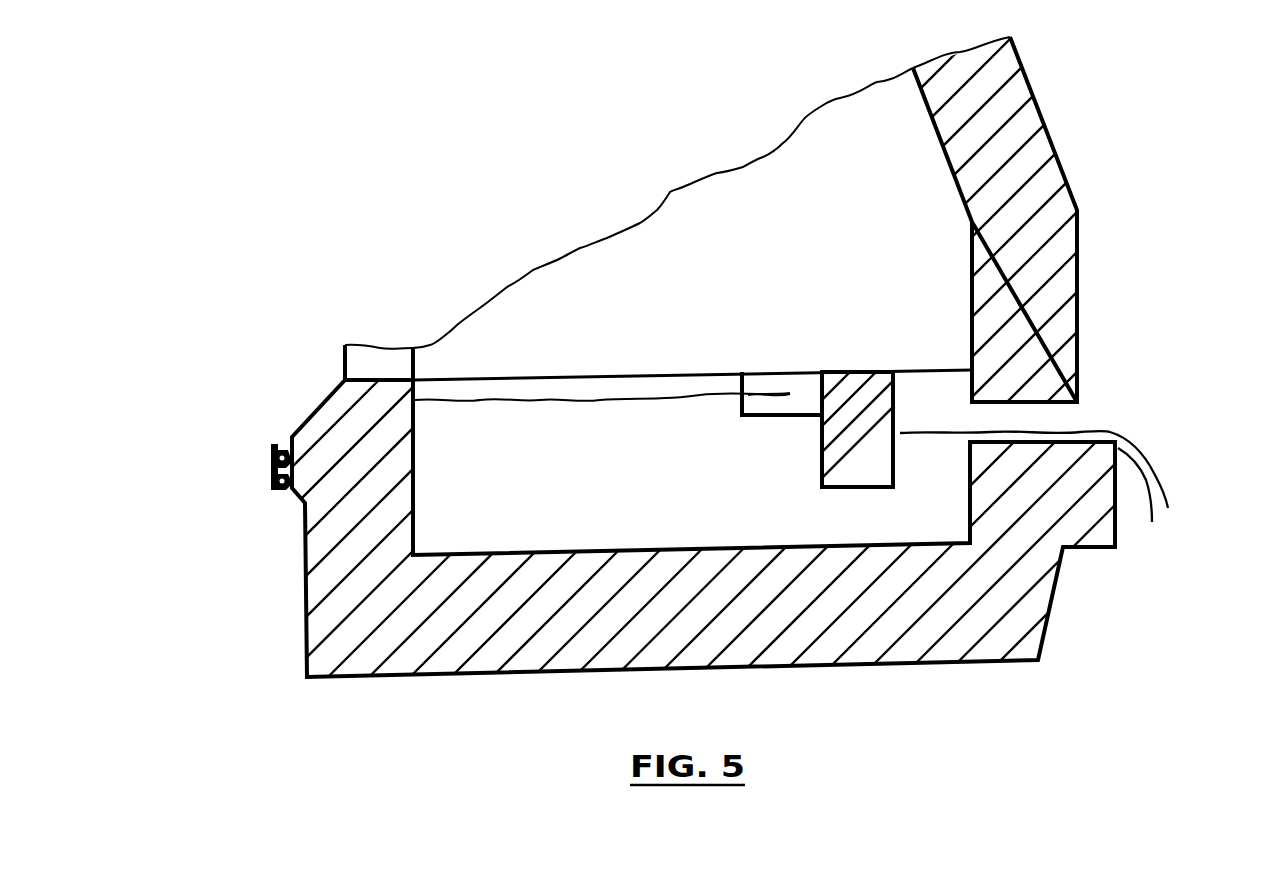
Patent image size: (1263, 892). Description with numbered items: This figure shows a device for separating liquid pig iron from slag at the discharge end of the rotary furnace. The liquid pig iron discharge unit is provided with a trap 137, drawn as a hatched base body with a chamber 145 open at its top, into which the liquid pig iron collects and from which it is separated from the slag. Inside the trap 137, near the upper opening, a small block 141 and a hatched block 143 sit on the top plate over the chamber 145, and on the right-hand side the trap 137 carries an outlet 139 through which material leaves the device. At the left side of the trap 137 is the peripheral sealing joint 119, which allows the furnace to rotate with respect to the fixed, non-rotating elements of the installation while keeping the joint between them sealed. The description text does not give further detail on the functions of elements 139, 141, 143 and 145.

The peripheral sealing joint 119 is at (272, 460).
The trap 137 is at (631, 550).
The outlet passage 139 is at (1064, 490).
The sensor block 141 is at (777, 385).
The plug block 143 is at (853, 395).
The reservoir chamber 145 is at (602, 442).